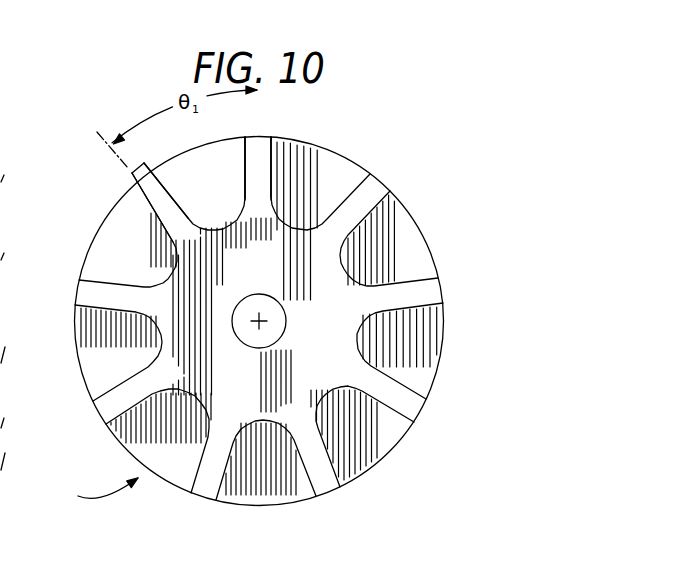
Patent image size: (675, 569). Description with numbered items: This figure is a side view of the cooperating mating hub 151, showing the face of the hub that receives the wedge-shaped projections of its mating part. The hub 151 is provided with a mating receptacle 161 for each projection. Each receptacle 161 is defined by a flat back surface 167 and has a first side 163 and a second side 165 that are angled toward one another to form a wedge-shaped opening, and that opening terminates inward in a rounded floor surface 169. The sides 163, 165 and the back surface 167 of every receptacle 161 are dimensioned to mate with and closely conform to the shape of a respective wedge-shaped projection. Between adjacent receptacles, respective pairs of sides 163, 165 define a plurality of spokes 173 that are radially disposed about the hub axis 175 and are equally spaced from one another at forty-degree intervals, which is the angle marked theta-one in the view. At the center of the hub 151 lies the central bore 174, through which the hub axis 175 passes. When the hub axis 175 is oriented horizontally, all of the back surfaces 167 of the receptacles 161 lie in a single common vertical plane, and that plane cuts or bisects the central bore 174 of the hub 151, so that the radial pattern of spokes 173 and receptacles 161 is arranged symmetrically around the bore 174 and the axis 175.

The mating hub 151 is at (99, 481).
The mating receptacle 161 is at (257, 215).
The first side 163 is at (172, 173).
The second side 165 is at (242, 190).
The flat back surface 167 is at (216, 161).
The rounded floor surface 169 is at (247, 218).
The spokes 173 is at (148, 352).
The central bore 174 is at (285, 323).
The hub axis 175 is at (258, 322).